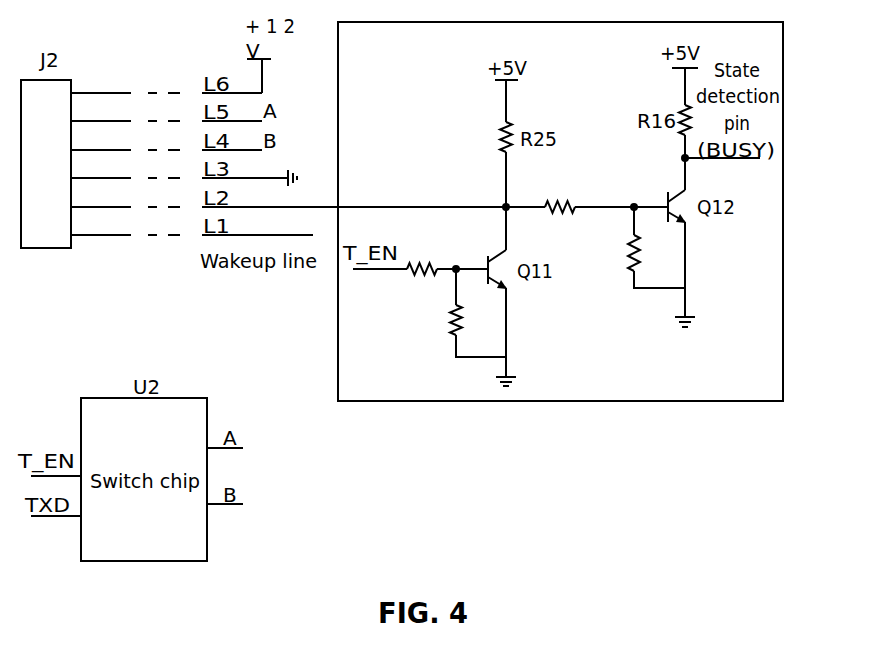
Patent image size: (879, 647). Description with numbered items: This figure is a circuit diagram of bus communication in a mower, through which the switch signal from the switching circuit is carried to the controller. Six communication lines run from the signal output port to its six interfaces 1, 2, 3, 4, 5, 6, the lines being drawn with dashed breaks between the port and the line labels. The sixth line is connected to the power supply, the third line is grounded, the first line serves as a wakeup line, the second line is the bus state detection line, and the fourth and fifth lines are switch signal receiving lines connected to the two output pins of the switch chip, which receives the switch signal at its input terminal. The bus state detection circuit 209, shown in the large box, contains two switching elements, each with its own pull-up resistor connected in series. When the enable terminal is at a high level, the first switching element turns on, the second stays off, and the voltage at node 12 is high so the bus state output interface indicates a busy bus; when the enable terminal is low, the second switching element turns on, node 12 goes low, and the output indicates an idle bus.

The bus state detection circuit 209 is at (783, 192).
The node 12 is at (710, 161).
The interface 1 is at (101, 225).
The interface 2 is at (101, 197).
The interface 3 is at (101, 168).
The interface 4 is at (101, 140).
The interface 5 is at (101, 111).
The interface 6 is at (101, 83).